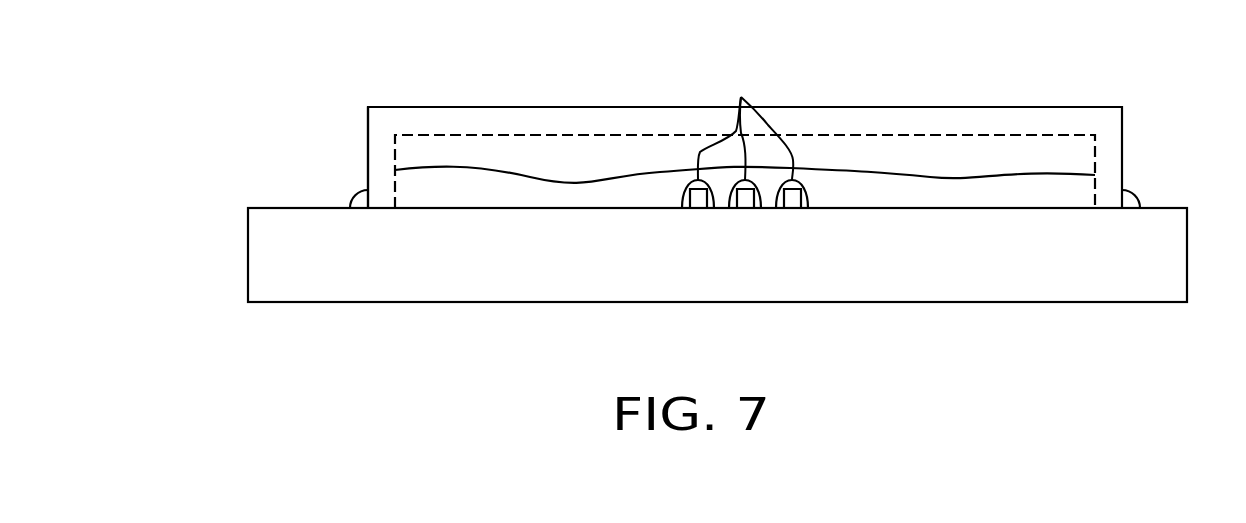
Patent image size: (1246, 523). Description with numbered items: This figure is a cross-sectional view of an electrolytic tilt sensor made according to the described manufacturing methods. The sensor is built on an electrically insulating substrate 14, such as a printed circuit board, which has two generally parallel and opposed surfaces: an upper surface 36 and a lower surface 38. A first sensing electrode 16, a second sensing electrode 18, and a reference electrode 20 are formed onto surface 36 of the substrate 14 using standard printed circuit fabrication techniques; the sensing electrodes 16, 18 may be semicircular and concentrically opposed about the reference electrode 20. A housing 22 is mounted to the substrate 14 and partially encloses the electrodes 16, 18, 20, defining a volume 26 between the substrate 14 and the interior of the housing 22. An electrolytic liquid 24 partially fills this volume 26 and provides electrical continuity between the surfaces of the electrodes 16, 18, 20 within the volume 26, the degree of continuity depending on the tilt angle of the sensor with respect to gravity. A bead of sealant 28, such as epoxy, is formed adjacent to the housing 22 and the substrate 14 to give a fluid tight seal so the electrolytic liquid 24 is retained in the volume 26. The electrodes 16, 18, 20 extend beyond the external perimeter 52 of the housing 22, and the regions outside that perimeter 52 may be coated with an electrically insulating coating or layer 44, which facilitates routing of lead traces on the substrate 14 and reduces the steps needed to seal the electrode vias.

The insulating substrate 14 is at (248, 258).
The first sensing electrode 16 is at (698, 197).
The second sensing electrode 18 is at (792, 197).
The reference electrode 20 is at (745, 197).
The housing 22 is at (1122, 130).
The electrolytic liquid 24 is at (1065, 187).
The volume 26 is at (933, 167).
The bead of sealant 28 is at (355, 204).
The surface of substrate 36 is at (270, 208).
The surface of substrate 38 is at (1095, 302).
The electrically insulating coating 44 is at (741, 97).
The external perimeter of housing 52 is at (380, 127).